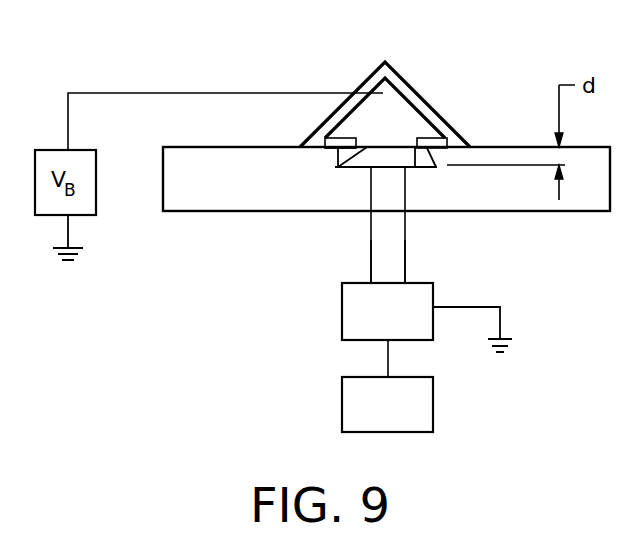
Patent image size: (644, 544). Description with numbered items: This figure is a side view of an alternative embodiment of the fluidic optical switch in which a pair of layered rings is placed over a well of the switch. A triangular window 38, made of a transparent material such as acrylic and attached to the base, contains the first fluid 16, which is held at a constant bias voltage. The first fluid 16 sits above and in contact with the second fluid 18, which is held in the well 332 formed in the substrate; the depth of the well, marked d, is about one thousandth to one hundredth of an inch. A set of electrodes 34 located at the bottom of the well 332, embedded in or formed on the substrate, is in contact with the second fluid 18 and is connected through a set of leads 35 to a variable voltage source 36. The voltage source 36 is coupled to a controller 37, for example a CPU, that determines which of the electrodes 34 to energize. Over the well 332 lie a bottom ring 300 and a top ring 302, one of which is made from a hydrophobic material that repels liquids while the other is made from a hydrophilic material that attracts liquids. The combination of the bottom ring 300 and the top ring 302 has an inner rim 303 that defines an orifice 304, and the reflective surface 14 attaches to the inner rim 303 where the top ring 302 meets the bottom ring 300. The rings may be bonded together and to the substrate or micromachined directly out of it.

The reflective surface 14 is at (340, 164).
The first fluid 16 is at (400, 110).
The second fluid 18 is at (435, 167).
The electrodes 34 is at (404, 168).
The leads 35 is at (372, 260).
The variable voltage source 36 is at (402, 325).
The controller 37 is at (402, 416).
The triangular window 38 is at (397, 72).
The bottom ring 300 is at (332, 150).
The top ring 302 is at (345, 137).
The inner rim 303 is at (414, 167).
The orifice 304 is at (403, 137).
The well 332 is at (366, 167).